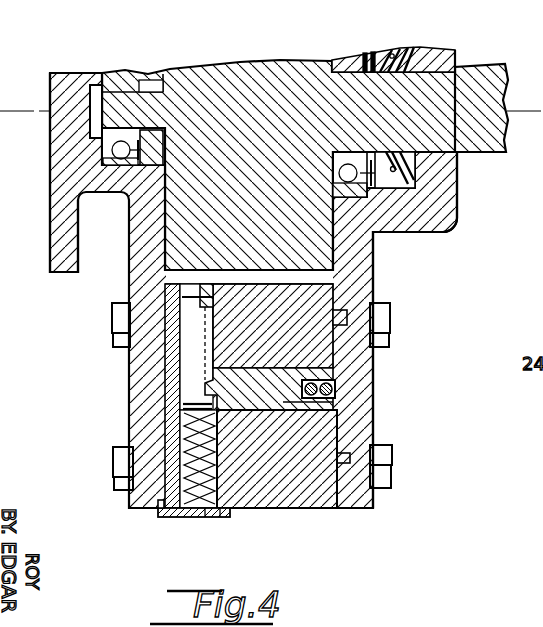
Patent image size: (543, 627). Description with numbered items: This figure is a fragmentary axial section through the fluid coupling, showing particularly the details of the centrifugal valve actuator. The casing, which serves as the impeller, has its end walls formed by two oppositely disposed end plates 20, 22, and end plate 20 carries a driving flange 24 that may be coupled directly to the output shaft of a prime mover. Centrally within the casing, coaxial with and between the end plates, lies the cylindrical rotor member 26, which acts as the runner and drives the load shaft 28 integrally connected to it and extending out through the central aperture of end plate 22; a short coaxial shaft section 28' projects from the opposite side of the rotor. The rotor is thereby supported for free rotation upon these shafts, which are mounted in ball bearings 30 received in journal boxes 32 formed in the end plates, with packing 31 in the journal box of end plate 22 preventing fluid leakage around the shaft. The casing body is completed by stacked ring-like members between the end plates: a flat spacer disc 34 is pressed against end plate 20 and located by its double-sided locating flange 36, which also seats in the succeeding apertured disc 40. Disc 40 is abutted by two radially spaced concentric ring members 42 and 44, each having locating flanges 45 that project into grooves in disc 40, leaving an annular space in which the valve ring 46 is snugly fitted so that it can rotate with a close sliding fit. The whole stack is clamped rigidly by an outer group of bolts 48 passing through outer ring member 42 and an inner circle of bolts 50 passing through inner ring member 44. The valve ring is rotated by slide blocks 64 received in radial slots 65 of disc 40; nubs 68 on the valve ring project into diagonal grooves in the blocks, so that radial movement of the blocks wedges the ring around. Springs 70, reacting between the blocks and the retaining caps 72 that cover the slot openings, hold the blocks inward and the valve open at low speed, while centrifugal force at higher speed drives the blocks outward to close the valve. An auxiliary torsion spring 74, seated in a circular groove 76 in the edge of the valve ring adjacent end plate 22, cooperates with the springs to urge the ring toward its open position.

The end plate 20 is at (137, 290).
The end plate 22 is at (362, 256).
The driving flange 24 is at (58, 248).
The rotor member 26 is at (273, 80).
The load shaft 28 is at (490, 95).
The shaft section 28' is at (138, 65).
The ball bearings 30 is at (127, 166).
The packing 31 is at (405, 55).
The journal boxes 32 is at (152, 160).
The spacer disc 34 is at (173, 430).
The locating flange 36 is at (157, 510).
The apertured disc 40 is at (180, 296).
The outer ring member 42 is at (285, 505).
The inner ring member 44 is at (322, 353).
The locating flanges 45 is at (347, 318).
The valve ring 46 is at (335, 405).
The bolts 48 is at (385, 470).
The bolts 50 is at (383, 325).
The slide blocks 64 is at (187, 389).
The radial slots 65 is at (205, 517).
The nubs 68 is at (201, 384).
The springs 70 is at (188, 516).
The retaining caps 72 is at (218, 517).
The auxiliary torsion spring 74 is at (290, 401).
The circular groove 76 is at (335, 386).